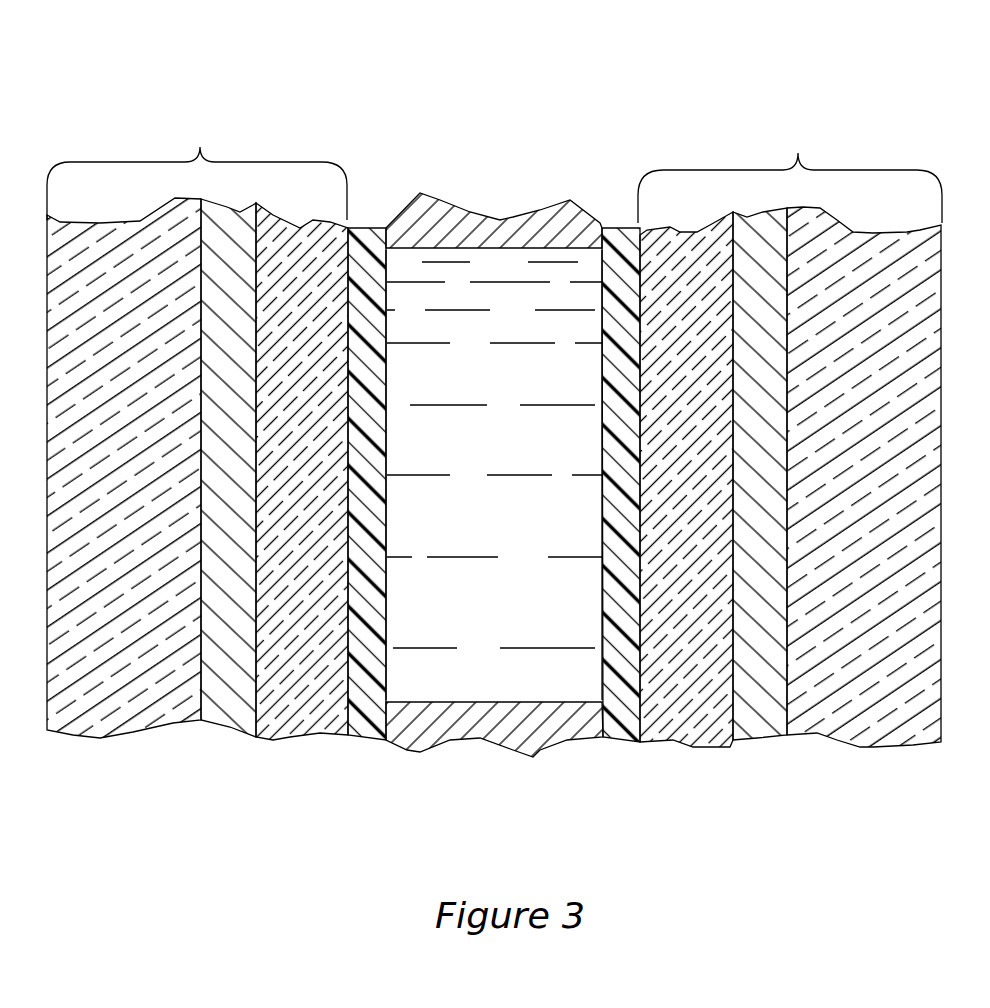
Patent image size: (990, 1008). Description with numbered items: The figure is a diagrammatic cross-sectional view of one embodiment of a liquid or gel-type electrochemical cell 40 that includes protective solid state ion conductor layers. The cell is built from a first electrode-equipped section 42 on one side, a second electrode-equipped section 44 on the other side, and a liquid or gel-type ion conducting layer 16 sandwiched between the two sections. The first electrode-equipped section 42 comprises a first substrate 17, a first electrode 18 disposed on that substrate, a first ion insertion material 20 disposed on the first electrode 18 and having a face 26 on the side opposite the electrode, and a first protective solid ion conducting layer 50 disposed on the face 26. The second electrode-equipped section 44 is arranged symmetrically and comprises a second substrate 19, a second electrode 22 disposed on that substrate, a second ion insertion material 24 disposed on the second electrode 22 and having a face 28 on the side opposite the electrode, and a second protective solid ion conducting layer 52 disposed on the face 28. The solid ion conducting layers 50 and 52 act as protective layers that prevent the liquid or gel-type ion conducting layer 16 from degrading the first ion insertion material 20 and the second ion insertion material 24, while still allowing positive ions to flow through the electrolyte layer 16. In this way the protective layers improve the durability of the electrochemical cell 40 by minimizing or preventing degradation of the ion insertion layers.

The liquid or gel-type ion conducting layer 16 is at (493, 252).
The first substrate 17 is at (128, 722).
The first electrode 18 is at (232, 718).
The second substrate 19 is at (850, 728).
The first ion insertion material 20 is at (320, 712).
The second electrode 22 is at (758, 733).
The second ion insertion material 24 is at (675, 733).
The face of first ion insertion material 26 is at (352, 682).
The face of second ion insertion material 28 is at (640, 710).
The liquid or gel-type electrochemical cell 40 is at (378, 90).
The first electrode-equipped section 42 is at (197, 164).
The second electrode-equipped section 44 is at (790, 170).
The first protective solid ion conducting layer 50 is at (377, 665).
The second protective solid ion conducting layer 52 is at (610, 657).